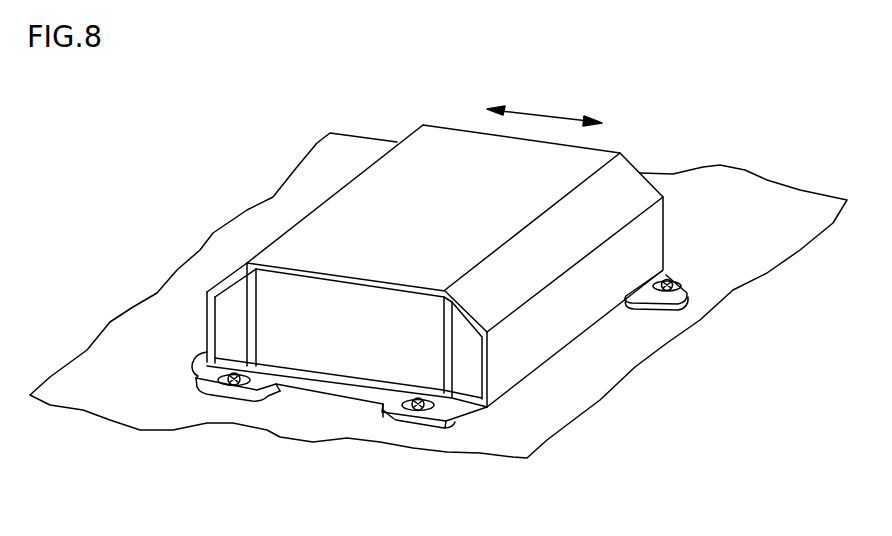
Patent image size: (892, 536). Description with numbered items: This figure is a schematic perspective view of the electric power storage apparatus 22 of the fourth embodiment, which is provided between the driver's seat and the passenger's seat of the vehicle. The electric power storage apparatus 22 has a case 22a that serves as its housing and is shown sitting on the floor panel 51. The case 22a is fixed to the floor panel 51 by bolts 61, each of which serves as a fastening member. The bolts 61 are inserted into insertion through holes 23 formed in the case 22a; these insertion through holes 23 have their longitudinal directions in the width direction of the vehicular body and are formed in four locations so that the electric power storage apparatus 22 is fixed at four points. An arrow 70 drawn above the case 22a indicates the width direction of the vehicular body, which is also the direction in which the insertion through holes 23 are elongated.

The electric power storage apparatus 22 is at (442, 145).
The case 22a is at (625, 188).
The insertion through holes 23 is at (255, 400).
The floor panel 51 is at (607, 376).
The bolts 61 is at (232, 386).
The arrow 70 is at (541, 114).